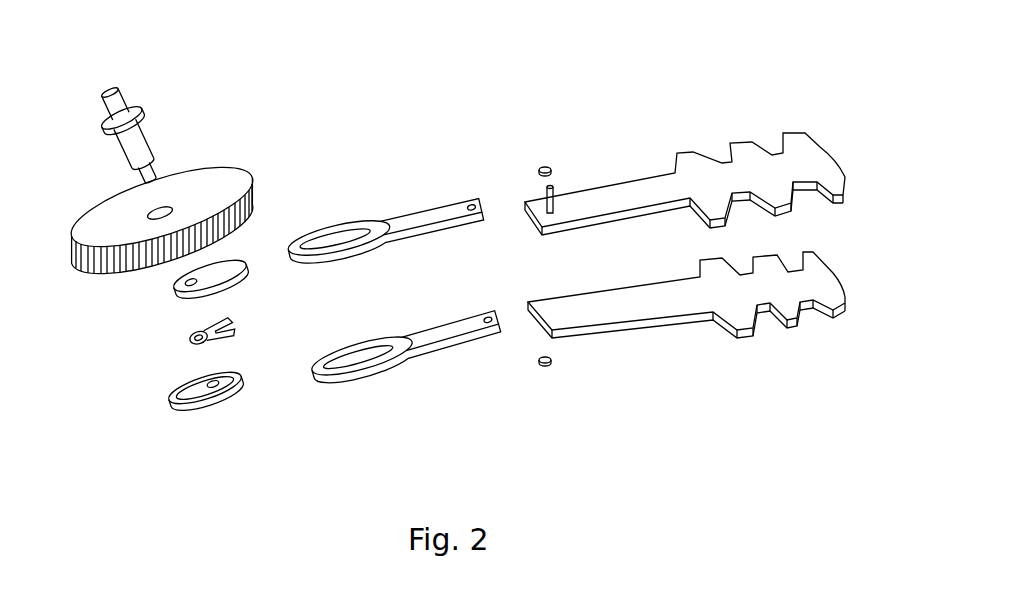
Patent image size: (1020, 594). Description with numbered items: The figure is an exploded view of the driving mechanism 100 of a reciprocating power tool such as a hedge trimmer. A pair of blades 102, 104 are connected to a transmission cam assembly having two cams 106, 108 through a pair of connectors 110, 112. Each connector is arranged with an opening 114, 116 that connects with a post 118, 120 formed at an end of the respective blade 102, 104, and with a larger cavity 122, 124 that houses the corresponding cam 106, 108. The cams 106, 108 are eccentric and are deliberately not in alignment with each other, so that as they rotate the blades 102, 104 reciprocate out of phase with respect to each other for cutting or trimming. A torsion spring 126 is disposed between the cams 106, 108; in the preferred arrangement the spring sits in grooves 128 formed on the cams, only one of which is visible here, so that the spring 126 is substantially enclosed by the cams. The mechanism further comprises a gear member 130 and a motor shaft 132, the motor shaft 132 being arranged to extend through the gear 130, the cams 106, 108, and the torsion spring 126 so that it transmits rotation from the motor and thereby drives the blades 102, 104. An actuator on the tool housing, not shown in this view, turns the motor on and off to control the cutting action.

The driving mechanism 100 is at (700, 51).
The blade 102 is at (783, 162).
The blade 104 is at (783, 283).
The cam 106 is at (177, 297).
The cam 108 is at (180, 407).
The connector 110 is at (400, 217).
The connector 112 is at (412, 350).
The opening 114 is at (466, 191).
The opening 116 is at (472, 314).
The post 118 is at (552, 197).
The post 120 is at (542, 335).
The cavity 122 is at (335, 236).
The cavity 124 is at (357, 364).
The torsion spring 126 is at (190, 338).
The groove 128 is at (214, 386).
The gear member 130 is at (82, 262).
The motor shaft 132 is at (137, 140).